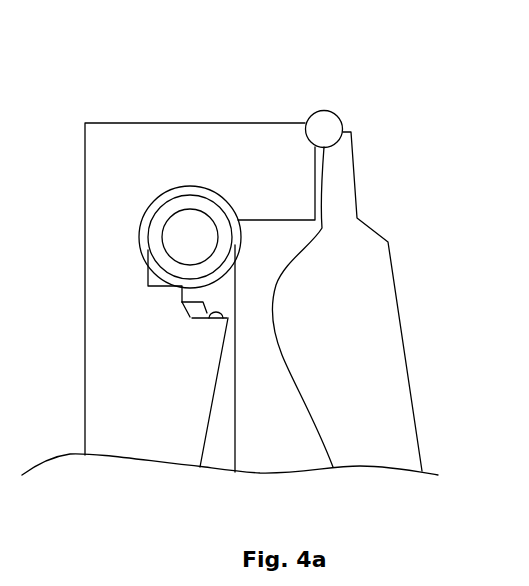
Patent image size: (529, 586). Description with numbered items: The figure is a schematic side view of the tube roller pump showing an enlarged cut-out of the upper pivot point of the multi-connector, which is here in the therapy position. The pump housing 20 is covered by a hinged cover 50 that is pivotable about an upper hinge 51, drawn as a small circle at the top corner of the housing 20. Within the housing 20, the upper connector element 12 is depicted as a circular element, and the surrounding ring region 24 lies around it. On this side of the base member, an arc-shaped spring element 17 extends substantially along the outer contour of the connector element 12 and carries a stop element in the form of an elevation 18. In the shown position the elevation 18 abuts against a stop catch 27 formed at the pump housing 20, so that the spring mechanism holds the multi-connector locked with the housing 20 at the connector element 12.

The pump housing 20 is at (207, 137).
The ring / guide 24 is at (172, 192).
The connector element 12 is at (208, 237).
The spring element 17 is at (190, 318).
The elevation 18 is at (192, 320).
The stop catch 27 is at (213, 322).
The upper hinge 51 is at (327, 117).
The hinged cover 50 is at (383, 355).